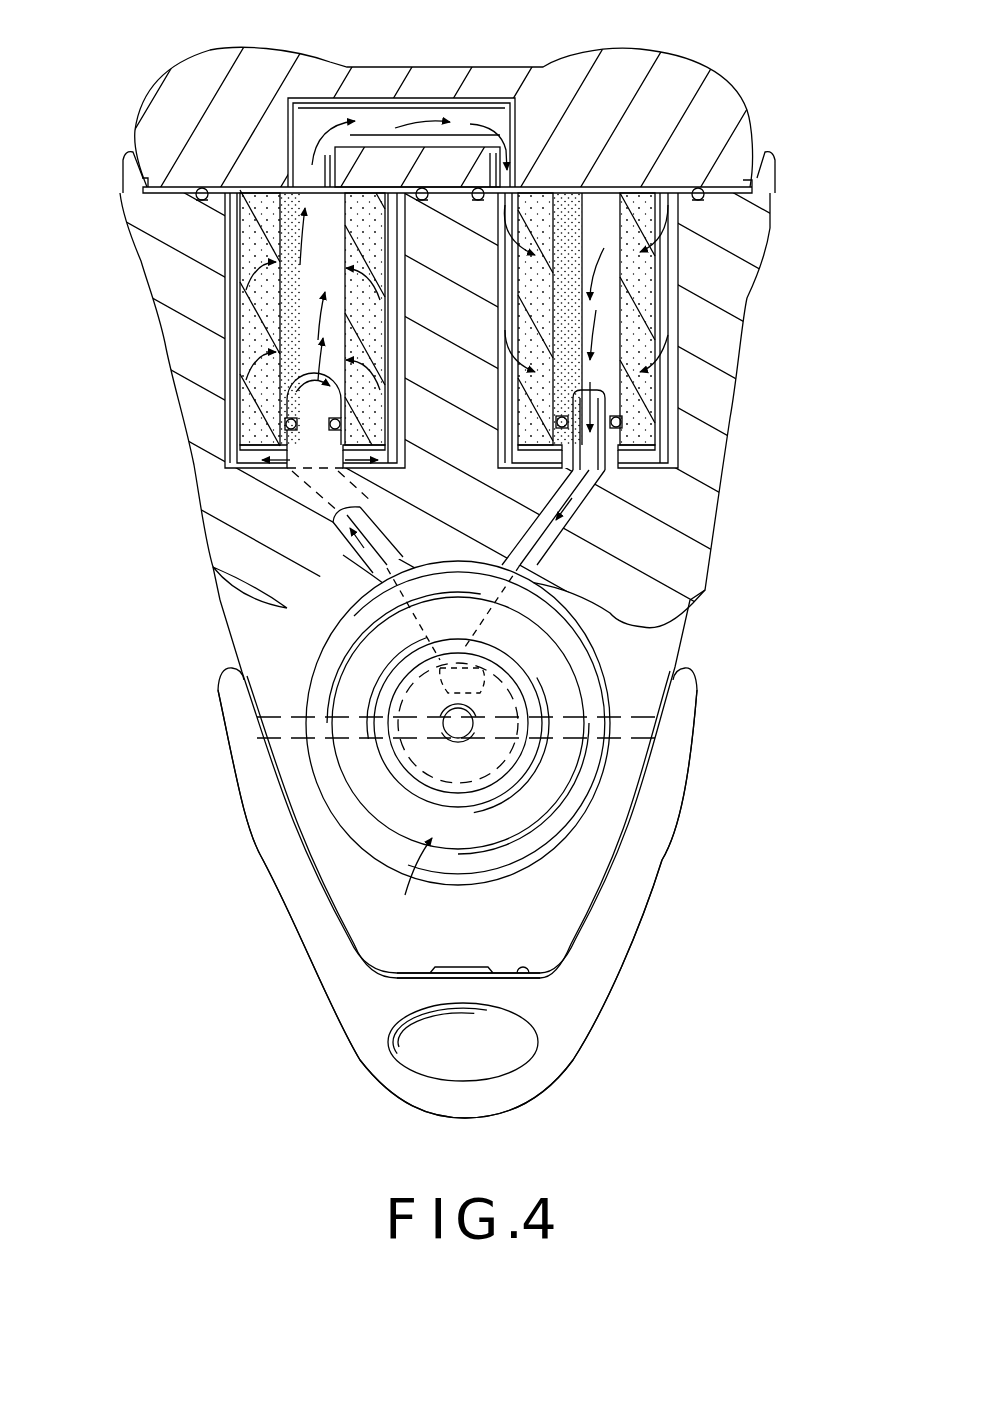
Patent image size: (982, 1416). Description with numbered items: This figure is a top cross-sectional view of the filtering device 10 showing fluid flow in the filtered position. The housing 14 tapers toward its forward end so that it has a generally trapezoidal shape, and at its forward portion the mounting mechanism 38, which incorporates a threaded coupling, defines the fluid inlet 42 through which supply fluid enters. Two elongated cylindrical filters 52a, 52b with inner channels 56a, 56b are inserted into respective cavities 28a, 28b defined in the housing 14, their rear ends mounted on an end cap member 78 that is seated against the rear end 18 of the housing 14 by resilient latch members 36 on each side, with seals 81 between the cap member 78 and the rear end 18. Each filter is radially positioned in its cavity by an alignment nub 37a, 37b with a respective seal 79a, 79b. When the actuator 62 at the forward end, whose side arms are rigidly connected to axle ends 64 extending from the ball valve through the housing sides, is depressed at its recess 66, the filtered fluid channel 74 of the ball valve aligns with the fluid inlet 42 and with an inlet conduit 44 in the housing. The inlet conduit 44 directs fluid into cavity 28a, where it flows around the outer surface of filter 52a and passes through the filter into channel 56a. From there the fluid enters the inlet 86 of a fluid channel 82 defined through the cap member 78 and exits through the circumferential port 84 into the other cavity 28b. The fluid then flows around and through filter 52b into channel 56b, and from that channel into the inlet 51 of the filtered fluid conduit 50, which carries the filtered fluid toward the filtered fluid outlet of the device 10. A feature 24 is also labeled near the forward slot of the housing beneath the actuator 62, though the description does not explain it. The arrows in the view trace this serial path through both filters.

The filtering device 10 is at (135, 882).
The housing 14 is at (735, 437).
The rear end 18 is at (690, 185).
The slot floor 24 is at (552, 975).
The cavity 28a is at (232, 418).
The cavity 28b is at (675, 382).
The resilient latch member 36 is at (130, 175).
The alignment nub 37a is at (310, 470).
The alignment nub 37b is at (600, 470).
The mounting mechanism 38 is at (458, 741).
The fluid inlet 42 is at (457, 723).
The inlet conduit 44 is at (350, 540).
The filtered fluid conduit 50 is at (560, 522).
The inlet 51 is at (612, 345).
The filter 52a is at (255, 325).
The filter 52b is at (655, 298).
The inner channel 56a is at (300, 297).
The inner channel 56b is at (635, 258).
The actuator 62 is at (610, 945).
The axle ends 64 is at (265, 735).
The recess 66 is at (490, 1058).
The filtered fluid channel 74 is at (468, 688).
The end cap member 78 is at (422, 65).
The seal 79a is at (288, 425).
The seal 79b is at (620, 422).
The seals 81 is at (202, 187).
The fluid channel 82 is at (432, 125).
The circumferential port 84 is at (512, 140).
The inlet 86 is at (330, 170).